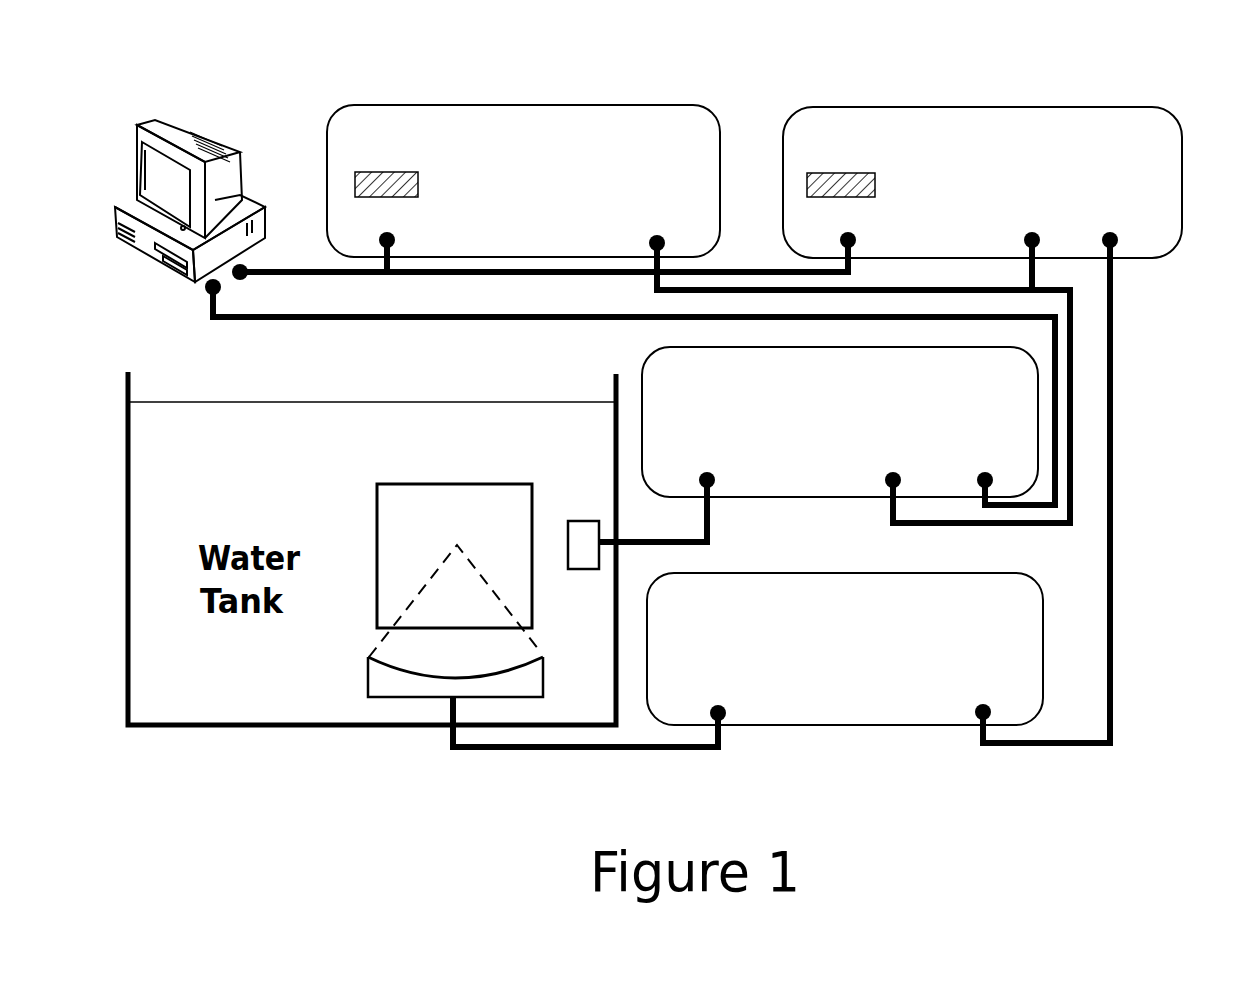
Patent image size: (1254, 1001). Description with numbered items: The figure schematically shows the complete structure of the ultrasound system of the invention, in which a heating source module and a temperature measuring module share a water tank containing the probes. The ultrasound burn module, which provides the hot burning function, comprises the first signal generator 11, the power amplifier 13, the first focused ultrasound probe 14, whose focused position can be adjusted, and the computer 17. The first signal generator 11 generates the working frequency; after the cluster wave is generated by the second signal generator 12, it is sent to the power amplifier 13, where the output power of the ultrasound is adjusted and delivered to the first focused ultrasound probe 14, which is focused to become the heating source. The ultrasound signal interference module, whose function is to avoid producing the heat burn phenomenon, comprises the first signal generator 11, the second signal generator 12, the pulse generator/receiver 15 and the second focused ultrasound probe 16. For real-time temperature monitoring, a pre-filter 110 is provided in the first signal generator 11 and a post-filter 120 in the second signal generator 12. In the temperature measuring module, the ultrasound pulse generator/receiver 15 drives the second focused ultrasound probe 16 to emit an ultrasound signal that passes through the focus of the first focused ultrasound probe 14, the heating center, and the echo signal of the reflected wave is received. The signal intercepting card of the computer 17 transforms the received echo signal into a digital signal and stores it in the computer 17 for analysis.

The first signal generator 11 is at (977, 135).
The pre-filter 110 is at (827, 177).
The second signal generator 12 is at (508, 136).
The post-filter 120 is at (377, 177).
The power amplifier 13 is at (1010, 630).
The first focused ultrasound probe 14 is at (392, 682).
The pulse generator/receiver 15 is at (1013, 388).
The second focused ultrasound probe 16 is at (586, 544).
The computer 17 is at (128, 142).